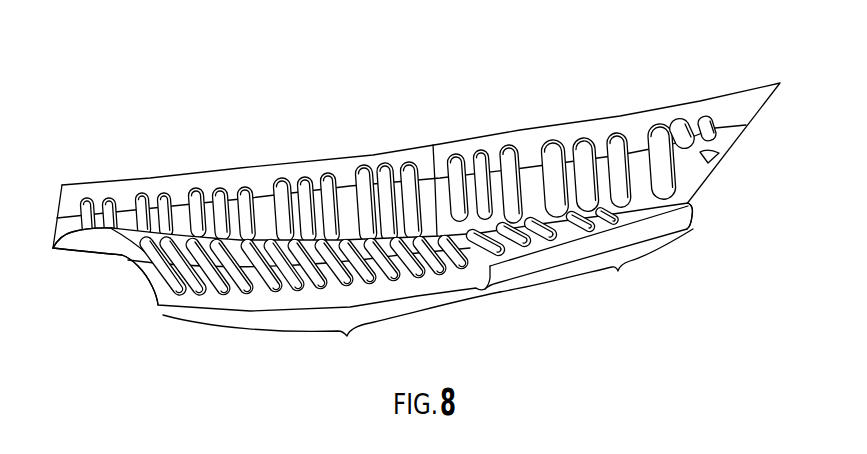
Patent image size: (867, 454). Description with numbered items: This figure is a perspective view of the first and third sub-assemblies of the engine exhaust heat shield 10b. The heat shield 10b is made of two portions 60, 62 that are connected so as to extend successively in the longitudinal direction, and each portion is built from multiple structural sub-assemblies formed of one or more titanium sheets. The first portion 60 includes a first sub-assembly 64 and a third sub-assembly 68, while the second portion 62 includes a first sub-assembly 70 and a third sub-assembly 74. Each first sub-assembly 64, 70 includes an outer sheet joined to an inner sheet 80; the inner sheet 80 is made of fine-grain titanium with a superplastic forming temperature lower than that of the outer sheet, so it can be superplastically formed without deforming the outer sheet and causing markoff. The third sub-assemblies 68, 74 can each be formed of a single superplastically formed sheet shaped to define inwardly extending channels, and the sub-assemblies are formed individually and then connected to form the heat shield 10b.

The heat shield 10b is at (110, 99).
The first sub-assembly 64 is at (132, 185).
The inner sheet 80 is at (178, 188).
The first sub-assembly of second portion 70 is at (512, 142).
The third sub-assembly 68 is at (122, 256).
The first portion 60 is at (373, 286).
The second portion 62 is at (591, 250).
The third sub-assembly of second portion 74 is at (688, 206).